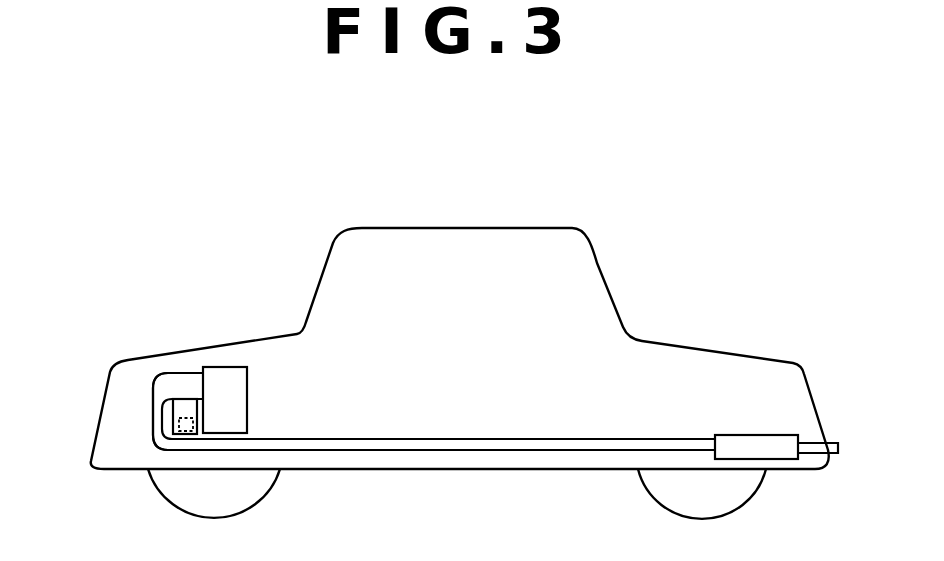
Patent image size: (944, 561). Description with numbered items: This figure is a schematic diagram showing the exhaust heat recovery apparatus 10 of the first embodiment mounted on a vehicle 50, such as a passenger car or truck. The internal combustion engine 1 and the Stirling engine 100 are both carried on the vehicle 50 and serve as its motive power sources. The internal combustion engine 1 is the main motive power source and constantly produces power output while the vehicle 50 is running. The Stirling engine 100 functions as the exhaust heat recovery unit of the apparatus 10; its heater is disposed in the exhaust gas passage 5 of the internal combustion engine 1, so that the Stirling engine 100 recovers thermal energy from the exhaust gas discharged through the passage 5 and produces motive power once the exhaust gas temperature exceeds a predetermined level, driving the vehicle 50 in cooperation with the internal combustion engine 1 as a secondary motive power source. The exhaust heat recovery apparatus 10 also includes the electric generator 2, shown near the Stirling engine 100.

The vehicle 50 is at (525, 243).
The exhaust heat recovery apparatus 10 is at (168, 367).
The exhaust gas passage 5 is at (167, 390).
The internal combustion engine 1 is at (232, 372).
The Stirling engine 100 is at (187, 403).
The electric generator 2 is at (173, 417).